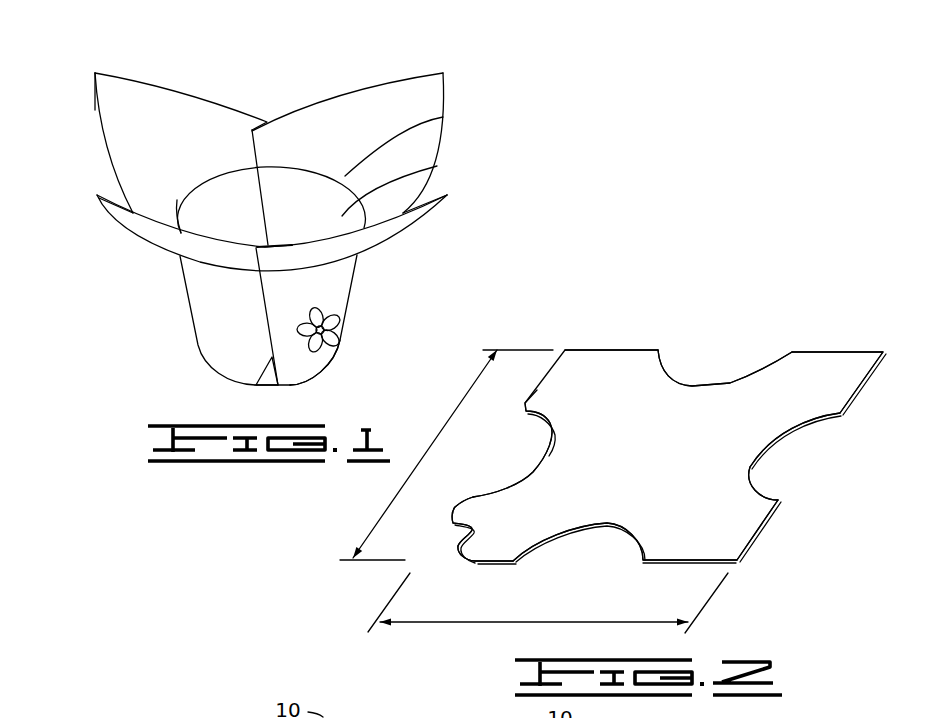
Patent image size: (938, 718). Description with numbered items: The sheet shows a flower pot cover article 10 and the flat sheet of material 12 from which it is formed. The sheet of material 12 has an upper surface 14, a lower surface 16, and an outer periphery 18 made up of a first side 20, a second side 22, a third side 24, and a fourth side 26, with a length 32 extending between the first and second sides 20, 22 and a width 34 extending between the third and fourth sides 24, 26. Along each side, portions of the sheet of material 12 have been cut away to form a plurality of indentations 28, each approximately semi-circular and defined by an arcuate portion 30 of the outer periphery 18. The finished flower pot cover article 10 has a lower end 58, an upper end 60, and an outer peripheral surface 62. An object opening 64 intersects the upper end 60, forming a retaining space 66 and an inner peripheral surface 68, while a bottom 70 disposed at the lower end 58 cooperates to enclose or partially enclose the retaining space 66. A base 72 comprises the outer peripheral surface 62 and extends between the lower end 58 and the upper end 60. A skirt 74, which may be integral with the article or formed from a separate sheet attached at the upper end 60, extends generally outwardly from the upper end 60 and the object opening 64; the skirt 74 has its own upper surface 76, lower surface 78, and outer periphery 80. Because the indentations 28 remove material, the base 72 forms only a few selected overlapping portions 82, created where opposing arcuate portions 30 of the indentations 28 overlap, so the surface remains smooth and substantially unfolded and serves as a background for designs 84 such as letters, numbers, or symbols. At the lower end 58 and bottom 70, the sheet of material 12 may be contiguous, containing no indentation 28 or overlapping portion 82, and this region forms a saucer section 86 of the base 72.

In FIG. 1, the flower pot cover article 10 is at (315, 58).
In FIG. 2, the flower pot cover article 10 is at (627, 315).
In FIG. 2, the sheet of material 12 is at (815, 328).
In FIG. 2, the upper surface 14 is at (700, 407).
In FIG. 2, the lower surface 16 is at (452, 528).
In FIG. 2, the outer periphery 18 is at (680, 562).
In FIG. 2, the first side 20 is at (762, 528).
In FIG. 2, the second side 22 is at (525, 404).
In FIG. 2, the third side 24 is at (833, 350).
In FIG. 2, the fourth side 26 is at (493, 560).
In FIG. 2, the indentation 28 is at (760, 452).
In FIG. 2, the arcuate portion 30 is at (800, 428).
In FIG. 2, the length 32 is at (537, 622).
In FIG. 2, the width 34 is at (430, 447).
In FIG. 1, the lower end 58 is at (218, 370).
In FIG. 1, the upper end 60 is at (443, 117).
In FIG. 1, the outer peripheral surface 62 is at (338, 284).
In FIG. 1, the object opening 64 is at (196, 192).
In FIG. 1, the retaining space 66 is at (437, 166).
In FIG. 1, the inner peripheral surface 68 is at (174, 212).
In FIG. 1, the bottom 70 is at (313, 377).
In FIG. 1, the base 72 is at (208, 295).
In FIG. 1, the skirt 74 is at (170, 107).
In FIG. 1, the upper surface 76 is at (412, 90).
In FIG. 1, the lower surface 78 is at (403, 228).
In FIG. 1, the outer periphery 80 is at (95, 97).
In FIG. 1, the overlapping portion 82 is at (250, 136).
In FIG. 1, the design 84 is at (340, 337).
In FIG. 1, the saucer section 86 is at (243, 363).